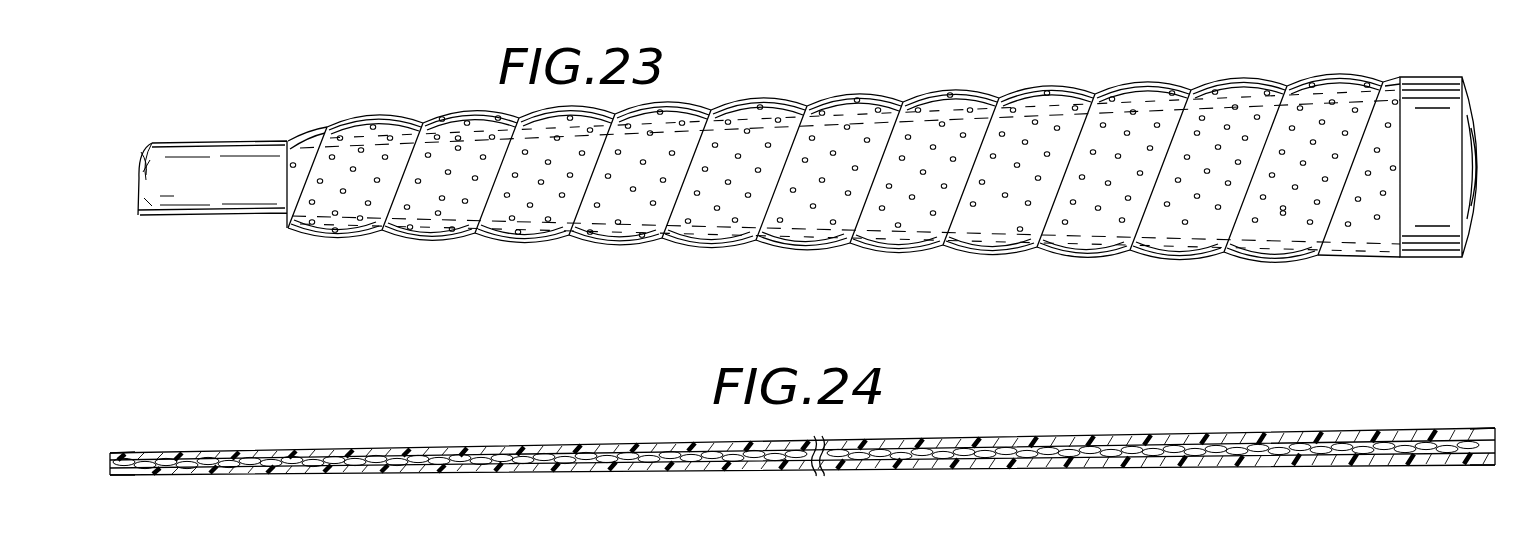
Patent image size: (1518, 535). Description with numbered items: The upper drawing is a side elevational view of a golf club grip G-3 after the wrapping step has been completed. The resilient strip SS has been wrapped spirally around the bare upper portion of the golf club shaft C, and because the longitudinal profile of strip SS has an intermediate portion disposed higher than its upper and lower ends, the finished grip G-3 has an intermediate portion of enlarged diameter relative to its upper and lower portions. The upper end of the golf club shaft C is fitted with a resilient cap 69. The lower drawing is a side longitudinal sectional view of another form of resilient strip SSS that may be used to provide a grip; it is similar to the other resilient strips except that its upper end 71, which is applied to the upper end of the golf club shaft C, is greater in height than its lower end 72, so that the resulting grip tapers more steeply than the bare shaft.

In FIG. 23, the golf club shaft C is at (232, 177).
In FIG. 23, the golf club grip G-3 is at (1005, 256).
In FIG. 23, the resilient strip SS is at (717, 241).
In FIG. 23, the resilient cap 69 is at (1432, 246).
In FIG. 24, the resilient strip SSS is at (928, 439).
In FIG. 24, the lower end of the strip 72 is at (132, 457).
In FIG. 24, the upper end of the strip 71 is at (1453, 435).